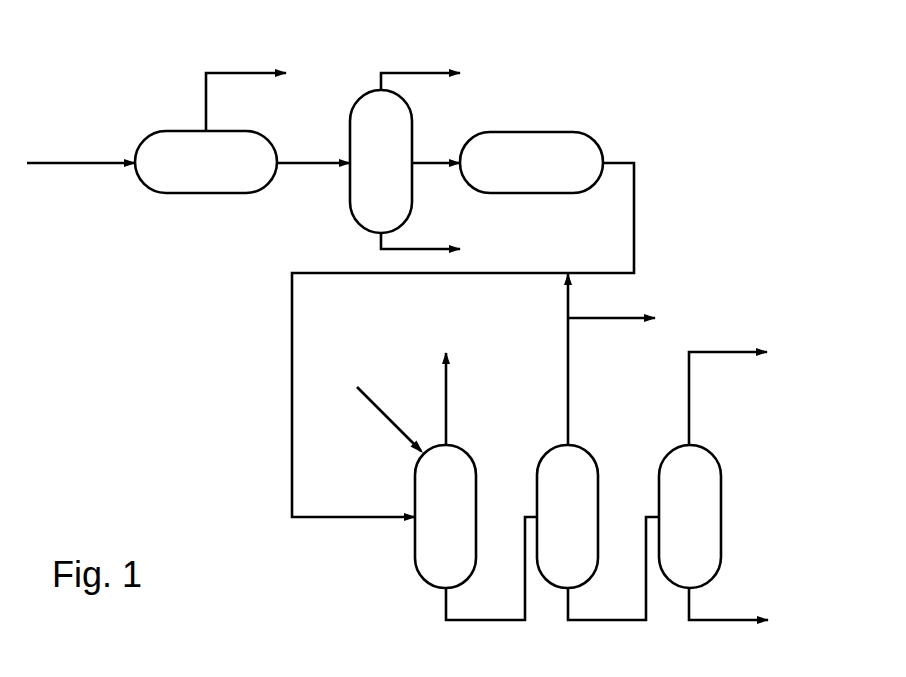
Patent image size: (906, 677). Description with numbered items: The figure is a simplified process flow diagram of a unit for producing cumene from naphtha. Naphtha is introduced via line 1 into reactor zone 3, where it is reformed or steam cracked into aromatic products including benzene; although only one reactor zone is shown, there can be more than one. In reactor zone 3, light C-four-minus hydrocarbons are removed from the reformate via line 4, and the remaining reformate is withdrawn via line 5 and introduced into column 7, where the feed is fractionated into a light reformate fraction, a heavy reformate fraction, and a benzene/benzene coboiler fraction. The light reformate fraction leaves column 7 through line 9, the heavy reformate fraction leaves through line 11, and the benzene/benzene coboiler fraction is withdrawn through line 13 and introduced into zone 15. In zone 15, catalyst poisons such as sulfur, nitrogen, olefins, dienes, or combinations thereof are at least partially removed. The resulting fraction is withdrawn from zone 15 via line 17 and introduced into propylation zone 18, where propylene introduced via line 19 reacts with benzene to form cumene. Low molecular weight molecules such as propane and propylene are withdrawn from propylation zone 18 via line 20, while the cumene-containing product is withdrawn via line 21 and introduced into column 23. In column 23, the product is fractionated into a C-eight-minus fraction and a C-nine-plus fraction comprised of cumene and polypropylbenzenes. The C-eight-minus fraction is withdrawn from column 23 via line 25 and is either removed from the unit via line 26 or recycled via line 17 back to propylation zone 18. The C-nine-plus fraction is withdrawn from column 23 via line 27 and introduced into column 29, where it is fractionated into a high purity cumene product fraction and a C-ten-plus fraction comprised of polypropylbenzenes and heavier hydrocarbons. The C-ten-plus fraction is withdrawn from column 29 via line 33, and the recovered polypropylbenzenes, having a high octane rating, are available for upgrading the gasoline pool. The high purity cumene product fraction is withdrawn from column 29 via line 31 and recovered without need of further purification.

The line 1 is at (73, 160).
The reactor zone 3 is at (205, 193).
The line 4 is at (233, 73).
The line 5 is at (300, 160).
The column 7 is at (412, 135).
The line 9 is at (412, 73).
The line 11 is at (412, 249).
The line 13 is at (425, 167).
The zone 15 is at (528, 132).
The line 17 is at (634, 228).
The propylation zone 18 is at (413, 552).
The line 19 is at (381, 418).
The line 20 is at (446, 412).
The line 21 is at (482, 620).
The column 23 is at (583, 447).
The line 25 is at (568, 385).
The line 26 is at (600, 318).
The line 27 is at (605, 620).
The column 29 is at (721, 492).
The line 31 is at (724, 352).
The line 33 is at (720, 620).